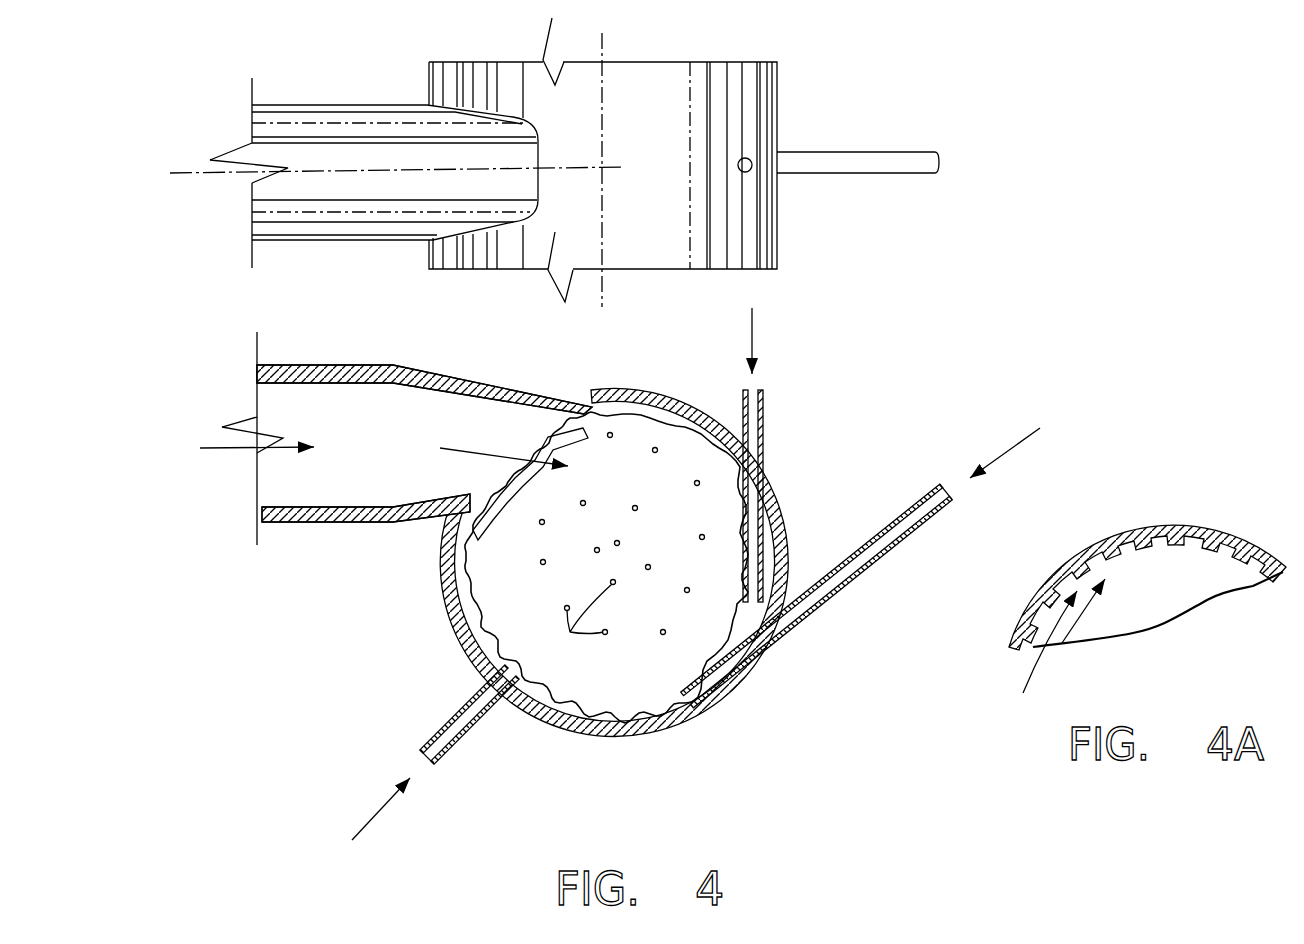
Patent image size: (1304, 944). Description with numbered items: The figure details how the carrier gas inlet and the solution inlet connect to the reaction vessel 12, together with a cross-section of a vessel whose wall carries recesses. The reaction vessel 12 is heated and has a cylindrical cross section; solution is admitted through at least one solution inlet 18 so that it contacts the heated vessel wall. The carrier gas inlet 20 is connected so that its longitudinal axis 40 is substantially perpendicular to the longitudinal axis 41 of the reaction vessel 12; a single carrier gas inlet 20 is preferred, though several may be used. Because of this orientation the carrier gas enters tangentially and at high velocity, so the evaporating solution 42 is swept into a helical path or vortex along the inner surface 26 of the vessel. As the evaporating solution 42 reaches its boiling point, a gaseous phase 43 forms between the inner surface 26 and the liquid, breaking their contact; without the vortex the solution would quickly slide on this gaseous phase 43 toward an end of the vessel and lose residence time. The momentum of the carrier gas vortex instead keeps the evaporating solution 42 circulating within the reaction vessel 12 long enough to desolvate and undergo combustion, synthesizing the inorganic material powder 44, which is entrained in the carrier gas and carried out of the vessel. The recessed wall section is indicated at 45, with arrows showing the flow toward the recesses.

In FIG. 4, the reaction vessel 12 is at (777, 100).
In FIG. 4A, the reaction vessel 12 is at (1167, 523).
In FIG. 4, the solution inlet 18 is at (745, 173).
In FIG. 4, the carrier gas inlet 20 is at (293, 112).
In FIG. 4, the inner surface 26 is at (693, 713).
In FIG. 4A, the inner surface 26 is at (1167, 540).
In FIG. 4, the longitudinal axis of the carrier gas inlet 40 is at (190, 173).
In FIG. 4, the longitudinal axis of the reaction vessel 41 is at (605, 285).
In FIG. 4, the evaporating solution 42 is at (607, 703).
In FIG. 4, the gaseous phase 43 is at (500, 470).
In FIG. 4, the inorganic material powder 44 is at (622, 554).
In FIG. 4A, the flow channels / grooves 45 is at (1049, 654).